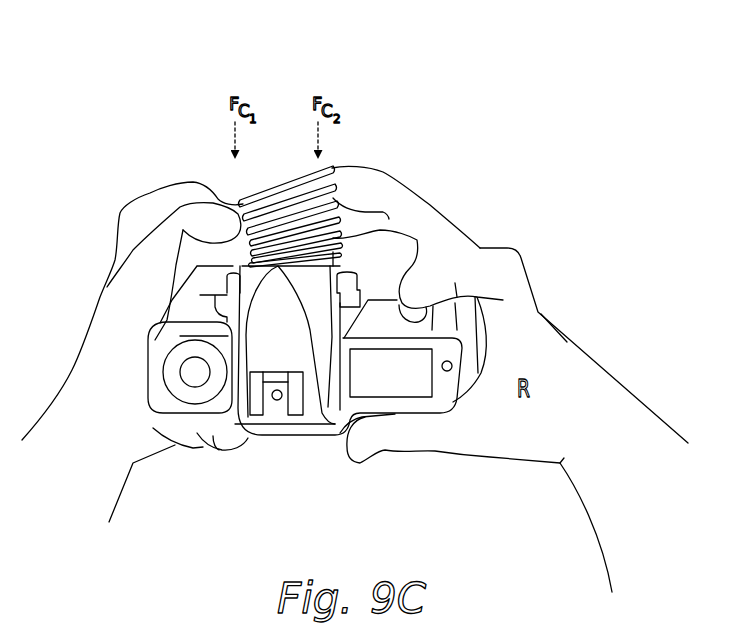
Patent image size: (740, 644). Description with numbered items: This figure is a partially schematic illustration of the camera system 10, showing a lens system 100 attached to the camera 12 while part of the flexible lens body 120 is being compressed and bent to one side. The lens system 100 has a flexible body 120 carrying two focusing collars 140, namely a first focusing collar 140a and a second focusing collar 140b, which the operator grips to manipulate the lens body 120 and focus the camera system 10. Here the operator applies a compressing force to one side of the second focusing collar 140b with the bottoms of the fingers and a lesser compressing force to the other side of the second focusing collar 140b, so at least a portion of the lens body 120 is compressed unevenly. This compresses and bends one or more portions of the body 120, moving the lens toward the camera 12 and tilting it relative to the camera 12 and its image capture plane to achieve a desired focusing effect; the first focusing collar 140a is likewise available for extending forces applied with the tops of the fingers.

The lens system 100 is at (240, 58).
The camera system 10 is at (224, 482).
The camera 12 is at (290, 440).
The lens body 120 is at (354, 298).
The focusing collars 140 is at (393, 80).
The first focusing collar 140a is at (354, 152).
The second focusing collar 140b is at (288, 224).